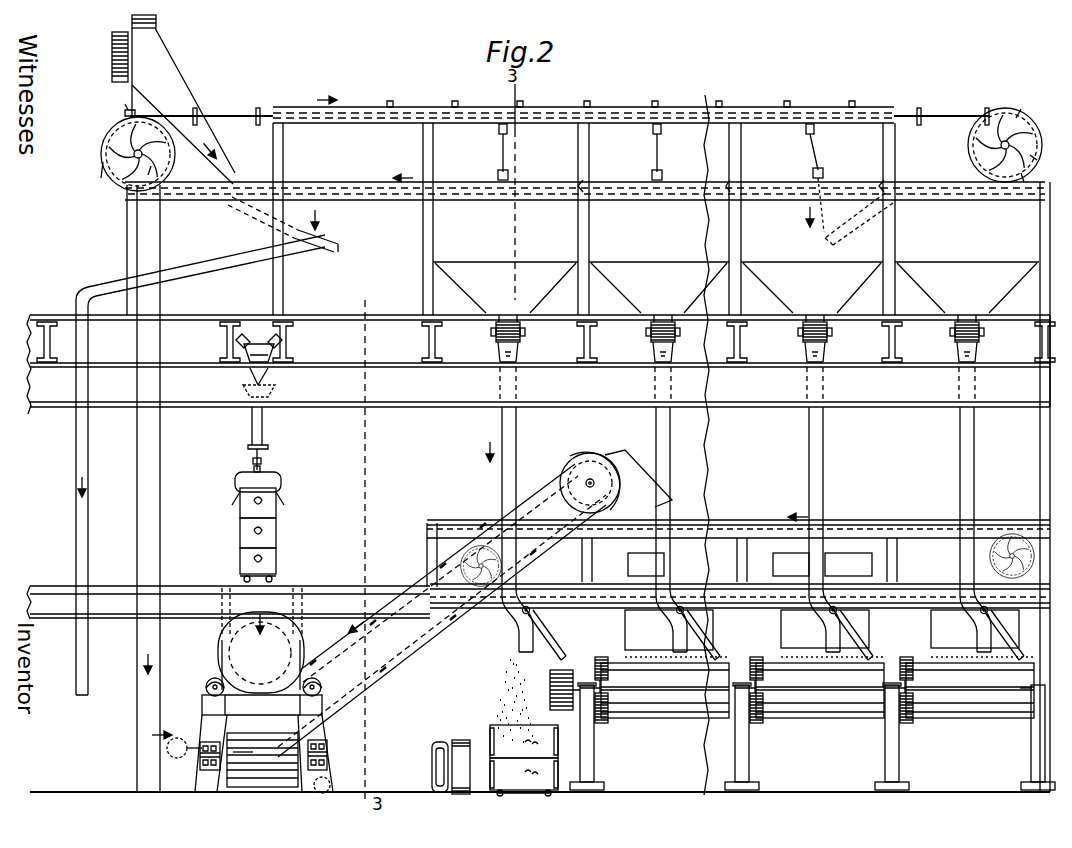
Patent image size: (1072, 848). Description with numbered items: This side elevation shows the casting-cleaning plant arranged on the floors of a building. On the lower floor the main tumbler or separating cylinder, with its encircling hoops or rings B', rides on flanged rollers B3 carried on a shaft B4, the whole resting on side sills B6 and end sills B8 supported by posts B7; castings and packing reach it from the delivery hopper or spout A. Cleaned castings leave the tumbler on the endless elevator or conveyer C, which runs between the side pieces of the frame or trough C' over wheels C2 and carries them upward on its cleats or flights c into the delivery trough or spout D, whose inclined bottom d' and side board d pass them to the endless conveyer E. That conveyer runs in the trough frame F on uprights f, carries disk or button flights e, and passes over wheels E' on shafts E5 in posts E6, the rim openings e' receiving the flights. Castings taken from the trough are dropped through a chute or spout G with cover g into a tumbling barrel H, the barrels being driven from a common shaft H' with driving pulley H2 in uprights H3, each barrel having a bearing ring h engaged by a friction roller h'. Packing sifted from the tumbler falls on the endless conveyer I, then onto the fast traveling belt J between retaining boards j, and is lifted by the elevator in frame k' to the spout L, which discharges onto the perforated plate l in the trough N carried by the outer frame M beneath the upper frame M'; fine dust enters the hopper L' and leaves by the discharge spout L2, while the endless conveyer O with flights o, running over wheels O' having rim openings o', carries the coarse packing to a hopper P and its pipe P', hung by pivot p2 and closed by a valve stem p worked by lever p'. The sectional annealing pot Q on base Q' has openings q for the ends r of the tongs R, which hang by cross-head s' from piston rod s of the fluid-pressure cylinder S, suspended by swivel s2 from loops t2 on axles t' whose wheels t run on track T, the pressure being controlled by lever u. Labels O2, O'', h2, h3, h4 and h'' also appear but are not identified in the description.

The upper frame or support M' is at (583, 100).
The disk or button flights o is at (557, 97).
The endless conveyer O is at (560, 106).
The pulley or wheel O' is at (555, 138).
The openings in rim o' is at (573, 131).
The fan hub O2 is at (989, 146).
The delivery spout or trough L is at (173, 99).
The outer frame or support M is at (585, 202).
The perforated plate l is at (294, 190).
The hanger block h4 is at (508, 130).
The hanger rod h2 is at (503, 150).
The hanger foot h3 is at (508, 172).
The handle or lever u is at (849, 219).
The trough or receiver N is at (760, 198).
The friction driving roller or pulley h' is at (746, 205).
The hopper P is at (736, 287).
The track T is at (546, 342).
The pin or pivot p2 is at (744, 358).
The tube or pipe P' is at (755, 533).
The stem p is at (775, 643).
The handle or lever p' is at (942, 632).
The trough frame or support F is at (868, 524).
The cover g is at (750, 564).
The uprights or standards f is at (720, 548).
The endless conveyer E is at (740, 568).
The pulley or carrying-wheels E' is at (721, 537).
The shaft E5 is at (1008, 530).
The standards or posts E6 is at (1022, 578).
The disk or button flights or buckets e is at (752, 558).
The openings in rim e' is at (736, 558).
The delivery chute or spout G is at (821, 633).
The tumbling barrel or cylinder H is at (812, 723).
The common shaft H' is at (947, 722).
The standards or uprights H3 is at (593, 742).
The driving-pulley H2 is at (568, 672).
The bearing ring or band h is at (761, 647).
The pinion h'' is at (741, 674).
The support or frame k' is at (150, 488).
The discharge-spout L2 is at (90, 472).
The hopper L' is at (294, 224).
The carrying-wheels t is at (259, 338).
The axles t' is at (259, 345).
The hangers or loops t2 is at (248, 366).
The eye or swivel s2 is at (246, 388).
The fluid-pressure cylinder S is at (264, 430).
The piston-rod s is at (246, 457).
The hanger or cross-head s' is at (241, 470).
The tongs or grappler R is at (281, 478).
The ends of tongs r is at (258, 502).
The base Q' is at (263, 600).
The delivery hopper or spout A is at (261, 652).
The encircling hoops or rings B' is at (251, 657).
The flanged rollers or friction-pulleys B3 is at (214, 676).
The shaft B4 is at (206, 685).
The side sills B6 is at (262, 705).
The end sills B8 is at (262, 705).
The posts B7 is at (340, 713).
The wheels C2 is at (282, 742).
The endless conveyer I is at (282, 742).
The endless elevator or conveyer C is at (406, 626).
The retaining-board j is at (335, 780).
The endless traveling belt or conveyer J is at (298, 795).
The frame or trough C' is at (442, 610).
The cleats, buckets, or flights c is at (400, 607).
The delivery trough or spout D is at (621, 476).
The side board or piece d is at (672, 463).
The inclined bottom d' is at (631, 501).
The annealing-pots Q is at (495, 760).
The hole or opening q is at (456, 768).
The cart O'' is at (456, 779).